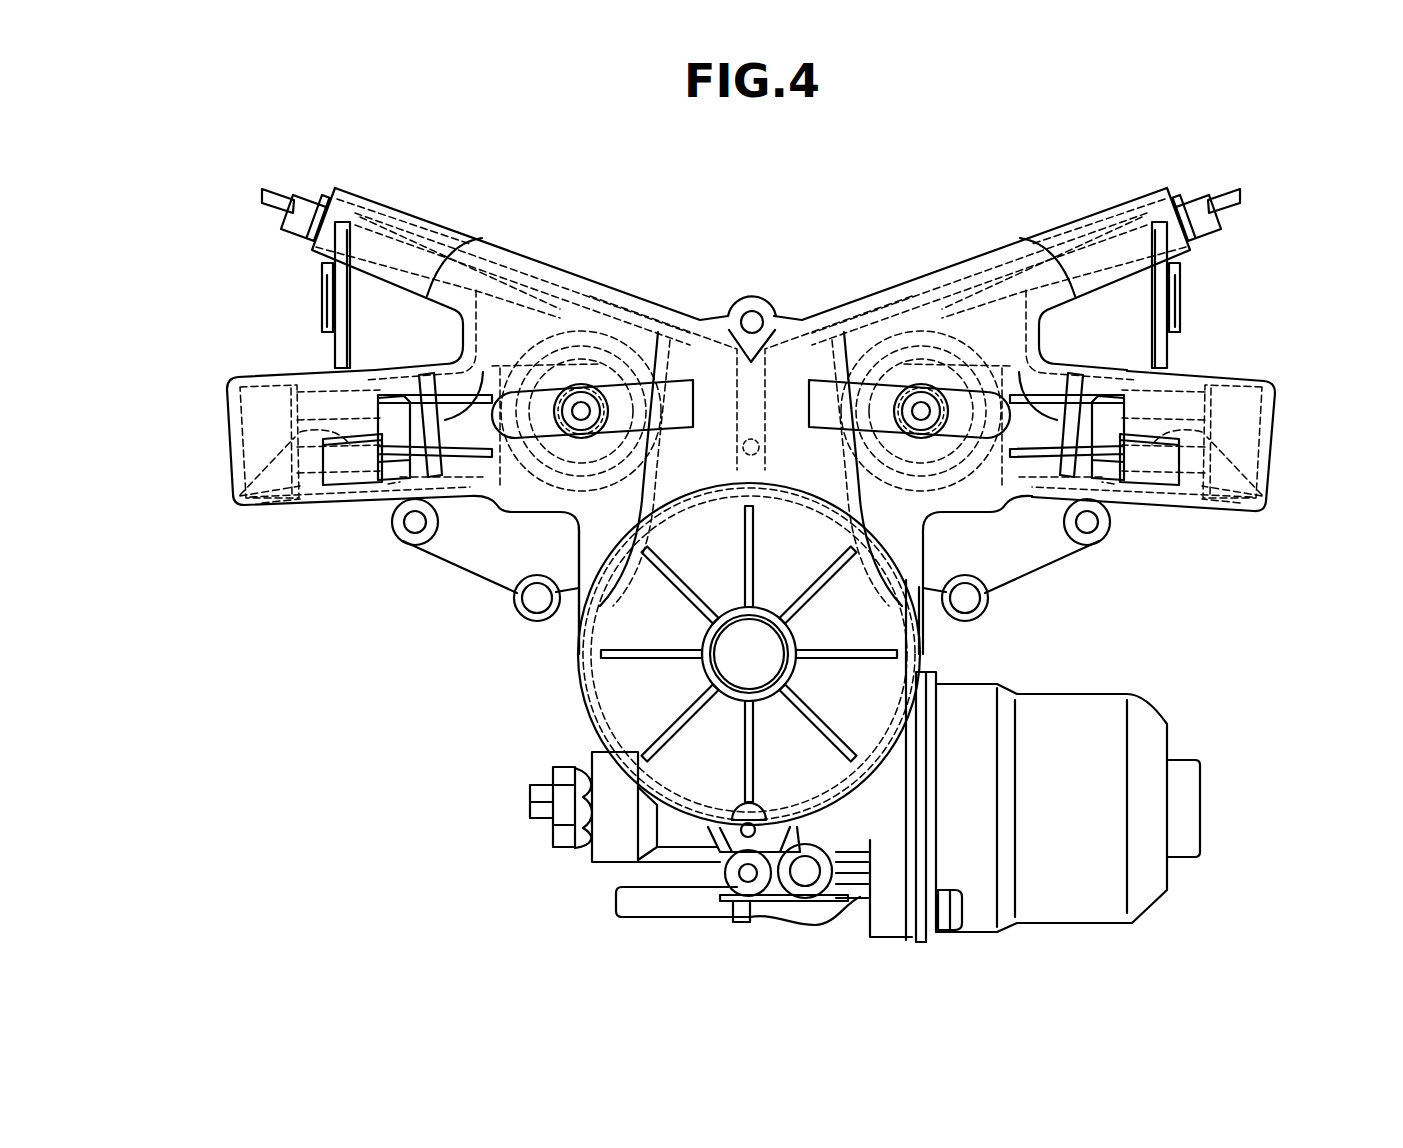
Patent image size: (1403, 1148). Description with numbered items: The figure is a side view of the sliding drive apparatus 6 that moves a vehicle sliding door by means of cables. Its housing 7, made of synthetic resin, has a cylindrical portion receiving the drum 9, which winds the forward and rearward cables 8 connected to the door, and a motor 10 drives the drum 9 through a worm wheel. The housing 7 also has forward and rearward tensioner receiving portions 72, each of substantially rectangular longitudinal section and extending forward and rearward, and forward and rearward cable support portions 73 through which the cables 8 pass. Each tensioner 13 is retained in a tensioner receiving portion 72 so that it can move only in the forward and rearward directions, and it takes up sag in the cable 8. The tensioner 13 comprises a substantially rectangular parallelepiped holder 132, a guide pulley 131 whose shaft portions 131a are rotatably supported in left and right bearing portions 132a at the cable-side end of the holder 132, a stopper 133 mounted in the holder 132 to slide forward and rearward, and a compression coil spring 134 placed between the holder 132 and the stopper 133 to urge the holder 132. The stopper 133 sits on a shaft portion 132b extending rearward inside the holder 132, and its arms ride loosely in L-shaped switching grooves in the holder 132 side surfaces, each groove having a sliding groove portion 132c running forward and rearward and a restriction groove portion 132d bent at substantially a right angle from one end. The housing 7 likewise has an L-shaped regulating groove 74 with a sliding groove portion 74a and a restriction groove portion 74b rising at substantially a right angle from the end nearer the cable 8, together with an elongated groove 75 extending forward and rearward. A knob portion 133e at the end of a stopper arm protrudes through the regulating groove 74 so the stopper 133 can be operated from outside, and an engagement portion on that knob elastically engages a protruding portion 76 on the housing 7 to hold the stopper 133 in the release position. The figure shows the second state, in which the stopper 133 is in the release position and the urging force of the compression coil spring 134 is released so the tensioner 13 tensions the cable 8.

The sliding drive apparatus 6 is at (767, 274).
The housing 7 is at (450, 562).
The cable 8 is at (463, 270).
The drum 9 is at (928, 605).
The motor 10 is at (1146, 912).
The tensioner 13 is at (288, 504).
The tensioner receiving portion 72 is at (267, 390).
The cable support portion 73 is at (353, 186).
The regulating groove 74 is at (335, 489).
The sliding groove portion 74a is at (352, 470).
The restriction groove portion 74b is at (388, 395).
The elongated groove 75 is at (553, 398).
The protruding portion 76 is at (483, 372).
The guide pulley 131 is at (537, 336).
The shaft portion 131a is at (658, 360).
The holder 132 is at (288, 416).
The bearing portion 132a is at (587, 398).
The shaft portion 132b is at (235, 493).
The sliding groove portion 132c is at (330, 466).
The restriction groove portion 132d is at (395, 498).
The stopper 133 is at (385, 390).
The knob portion 133e is at (404, 392).
The compression coil spring 134 is at (483, 527).